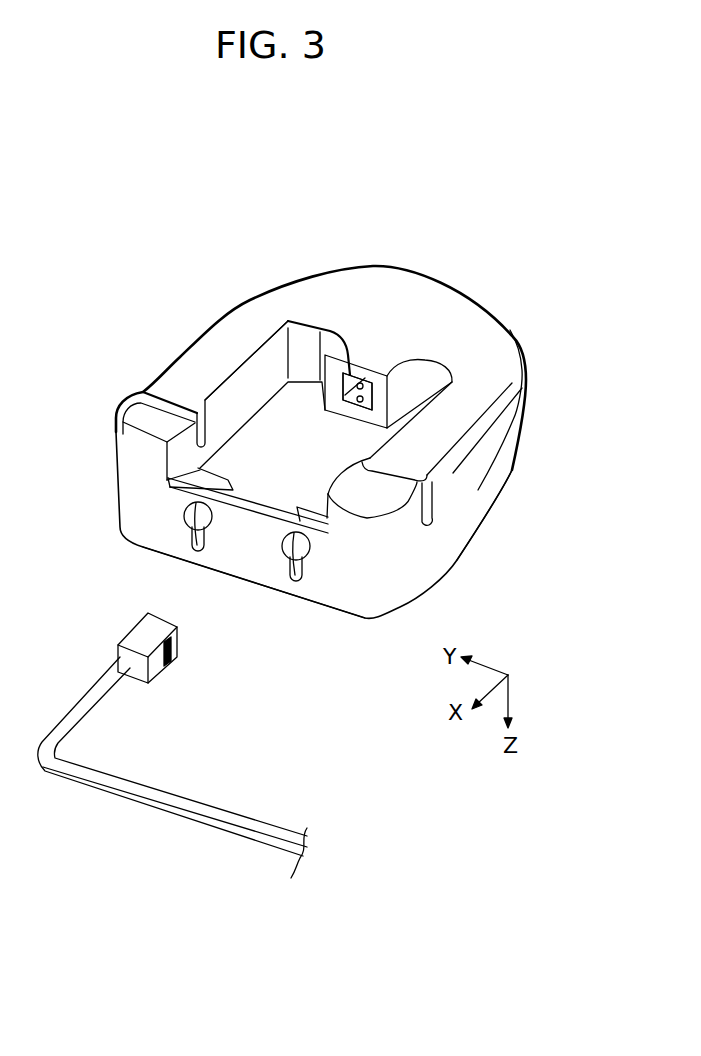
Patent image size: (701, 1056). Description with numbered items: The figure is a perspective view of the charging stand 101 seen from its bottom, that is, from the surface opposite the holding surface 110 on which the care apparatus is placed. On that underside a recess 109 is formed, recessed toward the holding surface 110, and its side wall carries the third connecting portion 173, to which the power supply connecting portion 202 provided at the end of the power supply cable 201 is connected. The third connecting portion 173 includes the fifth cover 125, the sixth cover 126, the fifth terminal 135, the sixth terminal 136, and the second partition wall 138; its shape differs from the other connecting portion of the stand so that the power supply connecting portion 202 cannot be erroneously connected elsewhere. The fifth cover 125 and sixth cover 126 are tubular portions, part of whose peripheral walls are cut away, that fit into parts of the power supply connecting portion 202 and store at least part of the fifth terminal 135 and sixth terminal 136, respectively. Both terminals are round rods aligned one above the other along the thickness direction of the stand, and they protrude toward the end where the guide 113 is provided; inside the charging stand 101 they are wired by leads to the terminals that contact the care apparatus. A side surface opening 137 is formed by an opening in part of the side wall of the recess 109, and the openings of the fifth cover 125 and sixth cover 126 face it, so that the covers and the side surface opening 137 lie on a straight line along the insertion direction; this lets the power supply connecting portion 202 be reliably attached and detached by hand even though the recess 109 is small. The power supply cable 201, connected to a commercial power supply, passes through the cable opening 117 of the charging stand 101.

The charging stand 101 is at (440, 277).
The recess 109 is at (250, 385).
The holding surface 110 is at (513, 460).
The guide 113 is at (316, 603).
The cable opening 117 is at (430, 505).
The fifth cover 125 is at (287, 322).
The sixth cover 126 is at (330, 328).
The fifth terminal 135 is at (360, 398).
The sixth terminal 136 is at (362, 388).
The side surface opening 137 is at (277, 500).
The second partition wall 138 is at (365, 382).
The third connecting portion 173 is at (379, 391).
The power supply cable 201 is at (225, 822).
The power supply connecting portion 202 is at (147, 627).